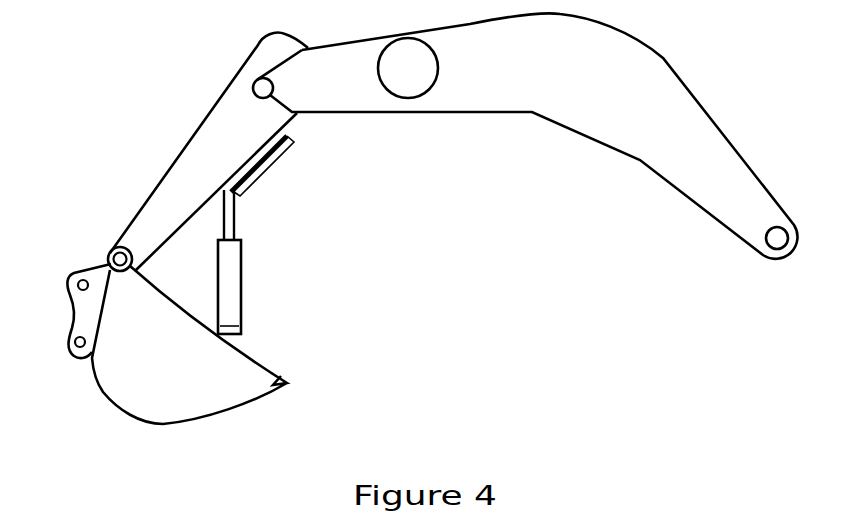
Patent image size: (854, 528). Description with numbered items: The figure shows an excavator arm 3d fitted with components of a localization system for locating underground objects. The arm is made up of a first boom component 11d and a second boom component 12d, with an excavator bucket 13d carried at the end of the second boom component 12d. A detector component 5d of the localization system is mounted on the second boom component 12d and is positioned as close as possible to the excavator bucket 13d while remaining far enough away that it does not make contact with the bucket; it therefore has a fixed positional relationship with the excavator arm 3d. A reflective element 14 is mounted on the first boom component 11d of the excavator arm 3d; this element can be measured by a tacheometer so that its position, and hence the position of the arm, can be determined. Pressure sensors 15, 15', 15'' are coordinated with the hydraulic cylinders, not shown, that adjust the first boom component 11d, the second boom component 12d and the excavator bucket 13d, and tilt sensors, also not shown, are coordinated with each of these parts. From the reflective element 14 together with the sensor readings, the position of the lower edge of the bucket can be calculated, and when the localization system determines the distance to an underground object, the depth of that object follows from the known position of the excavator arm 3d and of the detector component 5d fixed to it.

The excavator arm 3d is at (117, 100).
The detector component 5d is at (232, 279).
The first boom component 11d is at (693, 123).
The second boom component 12d is at (218, 157).
The excavator bucket 13d is at (237, 370).
The reflective element 14 is at (413, 85).
The pressure sensor 15 is at (732, 265).
The pressure sensor 15' is at (211, 62).
The pressure sensor 15'' is at (87, 220).